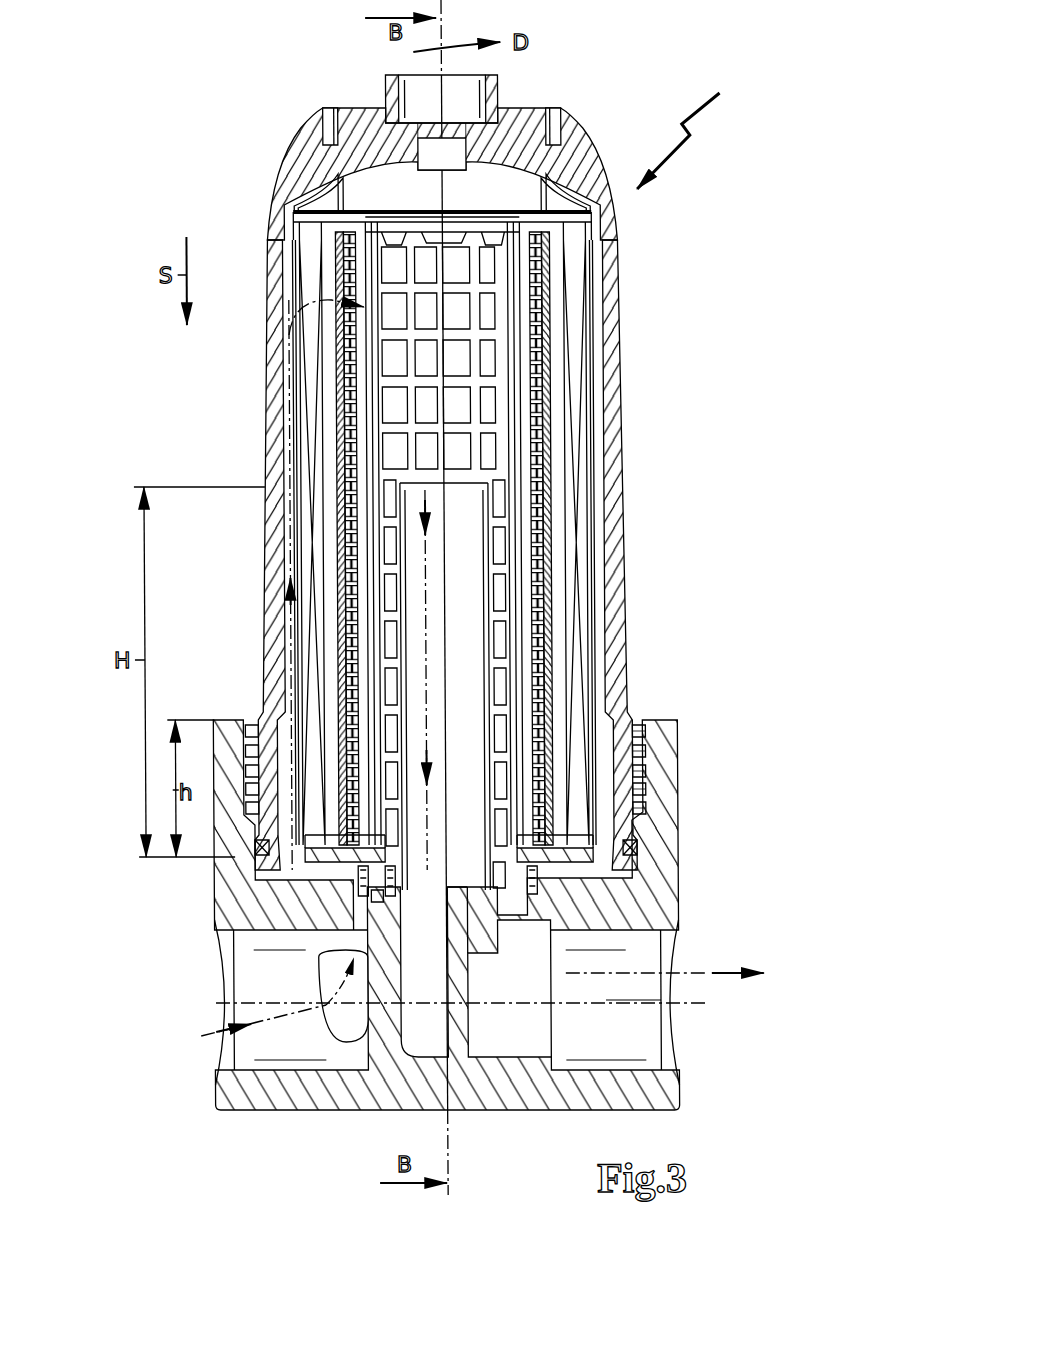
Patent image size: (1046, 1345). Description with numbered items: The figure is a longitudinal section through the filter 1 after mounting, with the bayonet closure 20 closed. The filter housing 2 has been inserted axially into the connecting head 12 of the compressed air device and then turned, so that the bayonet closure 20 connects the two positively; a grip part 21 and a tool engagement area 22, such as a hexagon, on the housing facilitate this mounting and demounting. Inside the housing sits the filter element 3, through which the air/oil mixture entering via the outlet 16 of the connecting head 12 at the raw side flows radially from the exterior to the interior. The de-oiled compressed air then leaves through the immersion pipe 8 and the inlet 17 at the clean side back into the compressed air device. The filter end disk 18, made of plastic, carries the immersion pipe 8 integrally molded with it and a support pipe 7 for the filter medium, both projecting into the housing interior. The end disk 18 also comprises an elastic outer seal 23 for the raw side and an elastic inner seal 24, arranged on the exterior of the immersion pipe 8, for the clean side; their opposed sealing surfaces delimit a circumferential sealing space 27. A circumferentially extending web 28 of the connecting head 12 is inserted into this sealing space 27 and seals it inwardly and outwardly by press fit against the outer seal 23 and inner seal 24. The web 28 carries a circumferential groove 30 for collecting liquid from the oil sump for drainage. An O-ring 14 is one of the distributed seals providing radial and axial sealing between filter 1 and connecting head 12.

The filter 1 is at (686, 131).
The filter housing 2 is at (612, 387).
The filter element 3 is at (356, 405).
The support pipe 7 is at (478, 410).
The immersion pipe 8 is at (466, 580).
The connecting head 12 is at (650, 760).
The O-ring 14 is at (634, 847).
The outlet 16 is at (640, 1050).
The inlet 17 is at (236, 995).
The filter end disk 18 is at (316, 861).
The bayonet closure 20 is at (648, 787).
The grip part 21 is at (568, 128).
The tool engagement area 22 is at (496, 94).
The outer seal 23 is at (348, 930).
The inner seal 24 is at (397, 904).
The sealing space 27 is at (375, 904).
The web 28 is at (512, 903).
The circumferential groove 30 is at (496, 861).